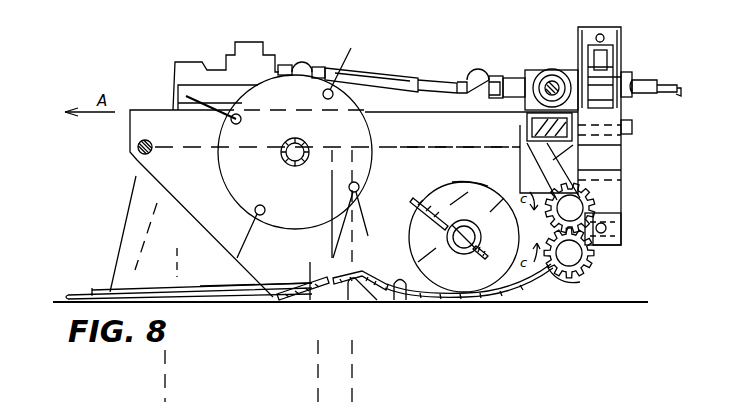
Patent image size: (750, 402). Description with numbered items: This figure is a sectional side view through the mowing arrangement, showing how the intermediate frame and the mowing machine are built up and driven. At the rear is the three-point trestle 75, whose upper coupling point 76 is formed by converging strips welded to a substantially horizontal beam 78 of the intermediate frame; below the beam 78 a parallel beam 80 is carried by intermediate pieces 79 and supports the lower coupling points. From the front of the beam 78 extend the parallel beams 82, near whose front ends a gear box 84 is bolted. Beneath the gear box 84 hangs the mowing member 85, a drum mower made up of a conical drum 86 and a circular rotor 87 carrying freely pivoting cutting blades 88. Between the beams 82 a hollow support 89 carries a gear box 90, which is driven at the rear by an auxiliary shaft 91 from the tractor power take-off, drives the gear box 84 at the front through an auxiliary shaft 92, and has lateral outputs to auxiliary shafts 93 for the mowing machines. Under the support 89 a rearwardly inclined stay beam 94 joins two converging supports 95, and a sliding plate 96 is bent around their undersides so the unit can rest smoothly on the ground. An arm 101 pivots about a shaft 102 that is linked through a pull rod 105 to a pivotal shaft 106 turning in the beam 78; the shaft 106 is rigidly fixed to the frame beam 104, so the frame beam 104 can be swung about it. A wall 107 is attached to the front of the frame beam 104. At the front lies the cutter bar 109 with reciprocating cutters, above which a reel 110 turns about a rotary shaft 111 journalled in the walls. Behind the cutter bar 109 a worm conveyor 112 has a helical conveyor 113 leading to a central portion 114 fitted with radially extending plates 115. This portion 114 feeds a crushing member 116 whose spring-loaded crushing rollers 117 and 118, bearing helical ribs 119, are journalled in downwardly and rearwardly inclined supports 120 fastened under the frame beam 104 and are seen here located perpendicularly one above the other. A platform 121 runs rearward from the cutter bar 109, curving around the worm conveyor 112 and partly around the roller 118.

The three-point trestle 75 is at (630, 42).
The upper coupling point 76 is at (580, 30).
The horizontal beam 78 is at (621, 154).
The intermediate pieces 79 is at (626, 167).
The beam 80 is at (621, 219).
The beams 82 is at (407, 152).
The gear box 84 is at (194, 63).
The mowing member 85 is at (108, 236).
The conical drum 86 is at (143, 181).
The circular rotor 87 is at (210, 297).
The cutting blades 88 is at (76, 296).
The hollow support 89 is at (525, 120).
The gear box 90 is at (530, 70).
The auxiliary shaft 91 is at (675, 89).
The auxiliary shaft 92 is at (405, 73).
The auxiliary shafts 93 is at (552, 72).
The stay beam 94 is at (403, 303).
The supports 95 is at (318, 234).
The sliding plate 96 is at (312, 271).
The arm 101 is at (613, 65).
The shaft 102 is at (657, 80).
The frame beam 104 is at (523, 143).
The pull rod 105 is at (626, 105).
The pivotal shaft 106 is at (634, 127).
The wall 107 is at (407, 112).
The cutter bar 109 is at (291, 303).
The reel 110 is at (232, 174).
The rotary shaft 111 is at (292, 166).
The worm conveyor 112 is at (455, 179).
The helical conveyor 113 is at (425, 191).
The portion 114 is at (489, 258).
The radially extending plates 115 is at (420, 210).
The crushing member 116 is at (546, 225).
The crushing roller 117 is at (597, 196).
The crushing roller 118 is at (594, 262).
The helical ribs 119 is at (582, 273).
The supports 120 is at (527, 162).
The platform 121 is at (501, 299).